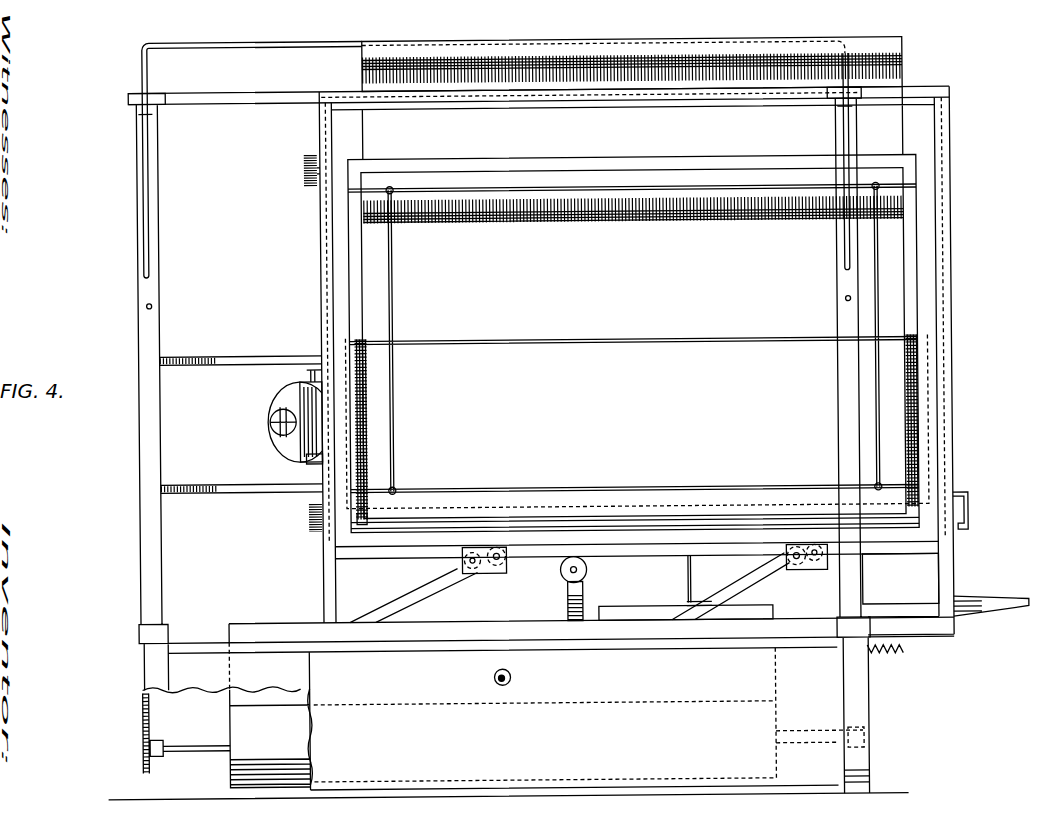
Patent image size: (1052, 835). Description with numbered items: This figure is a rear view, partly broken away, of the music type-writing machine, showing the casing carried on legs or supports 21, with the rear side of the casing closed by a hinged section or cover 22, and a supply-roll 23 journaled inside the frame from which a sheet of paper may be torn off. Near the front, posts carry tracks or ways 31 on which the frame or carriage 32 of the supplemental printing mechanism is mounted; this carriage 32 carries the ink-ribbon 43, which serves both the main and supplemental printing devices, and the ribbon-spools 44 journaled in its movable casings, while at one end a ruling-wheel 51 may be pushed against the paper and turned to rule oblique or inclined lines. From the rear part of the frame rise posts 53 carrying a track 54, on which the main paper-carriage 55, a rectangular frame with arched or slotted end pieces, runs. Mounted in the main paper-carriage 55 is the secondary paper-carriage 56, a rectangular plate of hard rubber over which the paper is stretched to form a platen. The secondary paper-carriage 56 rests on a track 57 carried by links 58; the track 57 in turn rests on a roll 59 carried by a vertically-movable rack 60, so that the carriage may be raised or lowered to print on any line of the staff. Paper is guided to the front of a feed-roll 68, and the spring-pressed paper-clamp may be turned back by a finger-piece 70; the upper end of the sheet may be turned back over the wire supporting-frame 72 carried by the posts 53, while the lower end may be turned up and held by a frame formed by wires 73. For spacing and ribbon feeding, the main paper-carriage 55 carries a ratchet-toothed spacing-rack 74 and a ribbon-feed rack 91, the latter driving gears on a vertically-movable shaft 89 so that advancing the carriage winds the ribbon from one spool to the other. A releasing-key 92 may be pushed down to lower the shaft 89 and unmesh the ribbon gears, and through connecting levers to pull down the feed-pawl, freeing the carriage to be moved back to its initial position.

The legs or supports 21 is at (866, 777).
The hinged section or cover 22 is at (561, 704).
The supply-roll 23 is at (228, 737).
The tracks or ways 31 is at (258, 355).
The frame or carriage 32 is at (290, 398).
The ink-ribbon 43 is at (321, 416).
The ribbon-spools 44 is at (313, 456).
The ruling-wheel 51 is at (281, 413).
The posts 53 is at (147, 428).
The track 54 is at (216, 98).
The main paper-carriage 55 is at (323, 255).
The secondary paper-carriage 56 is at (346, 281).
The track 57 is at (606, 554).
The links 58 is at (418, 592).
The roll 59 is at (559, 570).
The vertically-movable rack 60 is at (566, 607).
The feed-roll 68 is at (360, 540).
The finger-piece 70 is at (967, 499).
The wire supporting-frame 72 is at (257, 44).
The wires 73 is at (394, 292).
The ratchet-toothed spacing-rack 74 is at (894, 651).
The vertically-movable shaft 89 is at (689, 574).
The ribbon-feed rack 91 is at (893, 616).
The releasing-key 92 is at (686, 605).